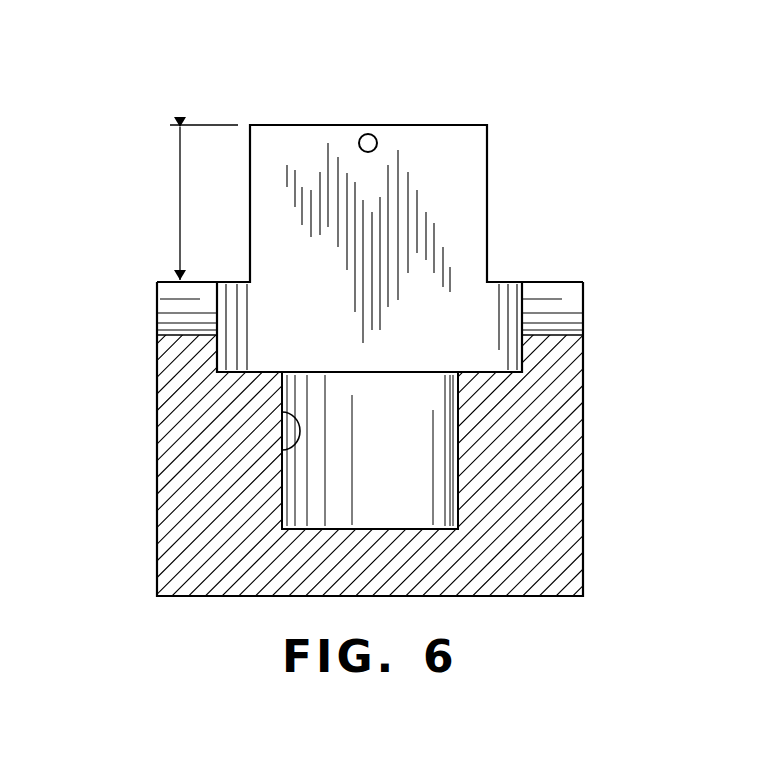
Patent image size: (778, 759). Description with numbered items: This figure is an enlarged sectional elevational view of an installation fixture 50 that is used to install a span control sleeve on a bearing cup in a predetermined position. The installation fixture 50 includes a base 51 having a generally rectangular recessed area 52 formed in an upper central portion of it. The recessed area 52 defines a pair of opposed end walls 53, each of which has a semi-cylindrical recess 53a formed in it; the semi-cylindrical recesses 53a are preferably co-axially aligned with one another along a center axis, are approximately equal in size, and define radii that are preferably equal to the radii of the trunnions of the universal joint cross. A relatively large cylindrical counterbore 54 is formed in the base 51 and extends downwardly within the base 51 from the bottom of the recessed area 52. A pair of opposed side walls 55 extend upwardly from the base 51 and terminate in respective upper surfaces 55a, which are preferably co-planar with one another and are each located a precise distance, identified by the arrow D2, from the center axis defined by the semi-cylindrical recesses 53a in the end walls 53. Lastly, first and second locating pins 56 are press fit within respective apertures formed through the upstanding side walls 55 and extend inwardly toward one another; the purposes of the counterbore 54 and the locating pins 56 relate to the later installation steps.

The installation fixture 50 is at (556, 93).
The base 51 is at (550, 510).
The recessed area 52 is at (473, 368).
The end walls 53 is at (163, 358).
The semi-cylindrical recesses 53a is at (183, 333).
The cylindrical counterbore 54 is at (282, 450).
The side walls 55 is at (465, 162).
The upper surfaces 55a is at (433, 125).
The locating pins 56 is at (368, 134).
The precise distance D2 is at (180, 185).